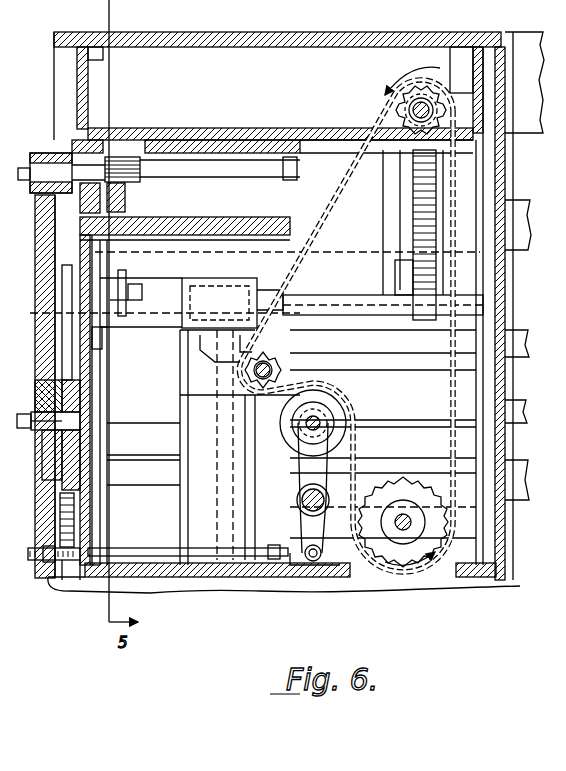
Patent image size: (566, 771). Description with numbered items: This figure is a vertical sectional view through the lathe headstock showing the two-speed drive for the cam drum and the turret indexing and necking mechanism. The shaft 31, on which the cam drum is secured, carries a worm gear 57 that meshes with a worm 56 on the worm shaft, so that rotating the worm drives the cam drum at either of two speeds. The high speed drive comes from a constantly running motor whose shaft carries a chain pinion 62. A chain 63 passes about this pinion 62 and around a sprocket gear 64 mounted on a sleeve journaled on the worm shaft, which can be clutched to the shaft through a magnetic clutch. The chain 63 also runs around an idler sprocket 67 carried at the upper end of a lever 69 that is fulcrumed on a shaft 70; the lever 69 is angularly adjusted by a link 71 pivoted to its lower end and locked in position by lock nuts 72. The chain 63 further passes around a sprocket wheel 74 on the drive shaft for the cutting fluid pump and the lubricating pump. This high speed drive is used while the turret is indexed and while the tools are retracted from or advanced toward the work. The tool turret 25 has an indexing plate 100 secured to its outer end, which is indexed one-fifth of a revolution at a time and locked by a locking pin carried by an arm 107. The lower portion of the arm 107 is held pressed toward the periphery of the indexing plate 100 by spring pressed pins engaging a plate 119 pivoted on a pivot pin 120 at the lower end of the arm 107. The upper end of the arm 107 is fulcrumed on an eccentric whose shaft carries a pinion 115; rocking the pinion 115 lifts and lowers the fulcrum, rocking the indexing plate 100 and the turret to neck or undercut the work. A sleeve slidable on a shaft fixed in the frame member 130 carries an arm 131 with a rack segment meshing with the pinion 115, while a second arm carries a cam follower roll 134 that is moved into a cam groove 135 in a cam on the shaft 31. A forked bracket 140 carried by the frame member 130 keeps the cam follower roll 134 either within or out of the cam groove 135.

The tool turret 25 is at (412, 522).
The shaft 31 is at (390, 258).
The worm 56 is at (435, 80).
The worm gear 57 is at (412, 176).
The chain pinion 62 is at (288, 366).
The chain 63 is at (330, 228).
The sprocket gear 64 is at (388, 118).
The idler sprocket 67 is at (342, 405).
The lever 69 is at (322, 468).
The shaft 70 is at (330, 524).
The link 71 is at (142, 552).
The lock nuts 72 is at (46, 545).
The sprocket wheel 74 is at (430, 485).
The indexing plate 100 is at (70, 276).
The arm 107 is at (37, 218).
The pinion 115 is at (128, 152).
The plate 119 is at (50, 466).
The pivot pin 120 is at (40, 402).
The frame member 130 is at (80, 344).
The arm 131 is at (120, 263).
The cam follower roll 134 is at (140, 300).
The cam groove 135 is at (138, 300).
The forked bracket 140 is at (151, 314).